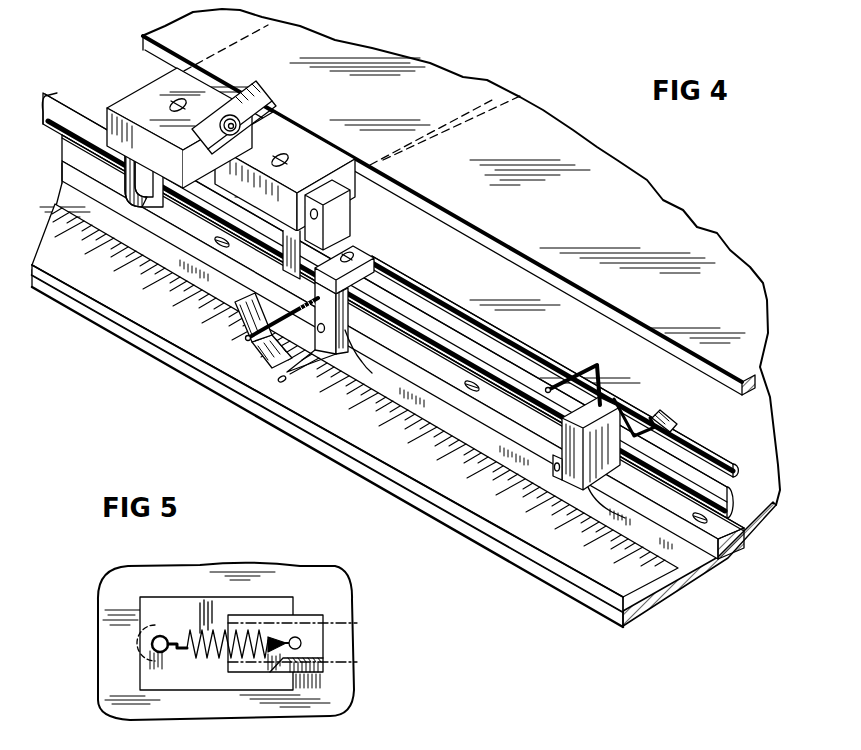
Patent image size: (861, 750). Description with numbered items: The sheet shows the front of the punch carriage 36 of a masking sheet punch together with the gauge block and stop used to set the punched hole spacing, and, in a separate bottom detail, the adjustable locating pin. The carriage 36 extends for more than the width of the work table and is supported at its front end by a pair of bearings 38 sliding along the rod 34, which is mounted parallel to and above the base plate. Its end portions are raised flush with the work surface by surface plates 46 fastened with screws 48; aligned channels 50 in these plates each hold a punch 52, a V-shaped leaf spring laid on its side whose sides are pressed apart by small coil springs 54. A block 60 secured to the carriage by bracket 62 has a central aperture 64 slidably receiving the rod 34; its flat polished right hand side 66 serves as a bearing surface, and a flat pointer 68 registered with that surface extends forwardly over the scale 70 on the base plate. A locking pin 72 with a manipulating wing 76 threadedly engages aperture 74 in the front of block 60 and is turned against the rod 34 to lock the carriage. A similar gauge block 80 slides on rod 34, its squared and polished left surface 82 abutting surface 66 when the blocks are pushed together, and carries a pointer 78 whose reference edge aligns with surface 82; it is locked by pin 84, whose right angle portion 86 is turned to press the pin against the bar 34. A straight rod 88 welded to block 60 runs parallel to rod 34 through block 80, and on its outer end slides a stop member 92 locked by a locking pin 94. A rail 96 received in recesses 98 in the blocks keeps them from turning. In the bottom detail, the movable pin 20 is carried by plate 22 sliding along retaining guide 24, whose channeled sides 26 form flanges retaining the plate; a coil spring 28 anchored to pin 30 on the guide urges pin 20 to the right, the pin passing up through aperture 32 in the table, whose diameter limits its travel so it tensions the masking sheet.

In FIG. 5, the movable pin 20 is at (163, 636).
In FIG. 5, the plate 22 is at (152, 605).
In FIG. 5, the retaining guide 24 is at (313, 642).
In FIG. 5, the channeled sides 26 is at (339, 645).
In FIG. 5, the coil spring 28 is at (218, 654).
In FIG. 5, the pin 30 is at (297, 637).
In FIG. 5, the aperture 32 is at (136, 648).
In FIG. 4, the rod 34 is at (720, 492).
In FIG. 4, the punch carriage 36 is at (110, 127).
In FIG. 4, the bearings 38 is at (133, 182).
In FIG. 4, the surface plates 46 is at (322, 162).
In FIG. 4, the screws 48 is at (172, 106).
In FIG. 4, the channels 50 is at (200, 212).
In FIG. 4, the punch 52 is at (262, 92).
In FIG. 4, the coil springs 54 is at (220, 124).
In FIG. 4, the block 60 is at (380, 262).
In FIG. 4, the bracket 62 is at (302, 232).
In FIG. 4, the central aperture 64 is at (415, 285).
In FIG. 4, the right hand side 66 is at (362, 262).
In FIG. 4, the pointer 68 is at (262, 406).
In FIG. 4, the scale 70 is at (318, 412).
In FIG. 4, the locking pin 72 is at (280, 338).
In FIG. 4, the aperture 74 is at (302, 307).
In FIG. 4, the manipulating wing 76 is at (245, 300).
In FIG. 4, the pointer 78 is at (553, 470).
In FIG. 4, the gauge block 80 is at (620, 390).
In FIG. 4, the left surface 82 is at (604, 378).
In FIG. 4, the pin 84 is at (598, 363).
In FIG. 4, the right angle portion 86 is at (552, 386).
In FIG. 4, the straight rod 88 is at (520, 340).
In FIG. 4, the stop member 92 is at (668, 412).
In FIG. 4, the locking pin 94 is at (625, 400).
In FIG. 4, the rail 96 is at (480, 398).
In FIG. 4, the recesses 98 is at (494, 429).